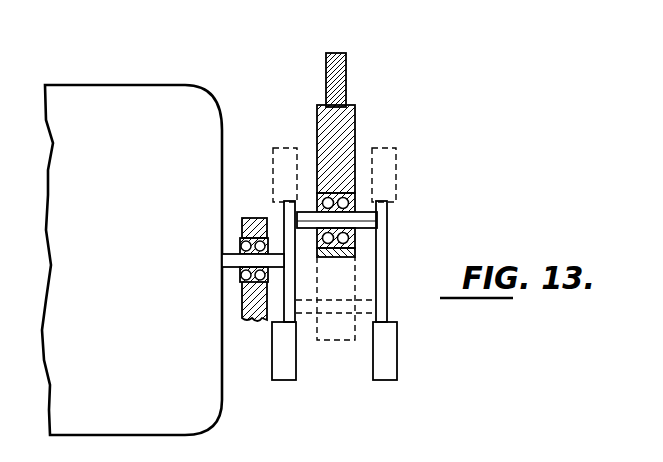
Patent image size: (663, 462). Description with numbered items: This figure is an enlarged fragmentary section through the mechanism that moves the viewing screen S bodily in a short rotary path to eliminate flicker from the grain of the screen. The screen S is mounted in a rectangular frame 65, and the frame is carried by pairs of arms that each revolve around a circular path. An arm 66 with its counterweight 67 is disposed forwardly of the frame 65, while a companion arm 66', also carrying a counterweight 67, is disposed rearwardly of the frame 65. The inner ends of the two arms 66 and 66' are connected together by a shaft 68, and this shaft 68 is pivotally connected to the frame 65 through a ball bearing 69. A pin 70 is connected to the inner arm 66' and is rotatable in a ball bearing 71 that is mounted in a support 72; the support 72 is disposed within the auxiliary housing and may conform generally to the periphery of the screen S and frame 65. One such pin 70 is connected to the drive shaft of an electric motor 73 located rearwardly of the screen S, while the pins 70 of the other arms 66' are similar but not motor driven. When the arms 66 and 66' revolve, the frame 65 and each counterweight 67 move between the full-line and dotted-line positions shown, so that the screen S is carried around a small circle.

The electric motor 73 is at (180, 103).
The screen S is at (344, 58).
The rectangular frame 65 is at (355, 126).
The ball bearing 69 is at (320, 200).
The shaft 68 is at (362, 212).
The companion arm 66' is at (263, 249).
The arm 66 is at (360, 261).
The counterweight 67 is at (282, 147).
The pin 70 is at (240, 250).
The ball bearing 71 is at (222, 263).
The support 72 is at (250, 321).